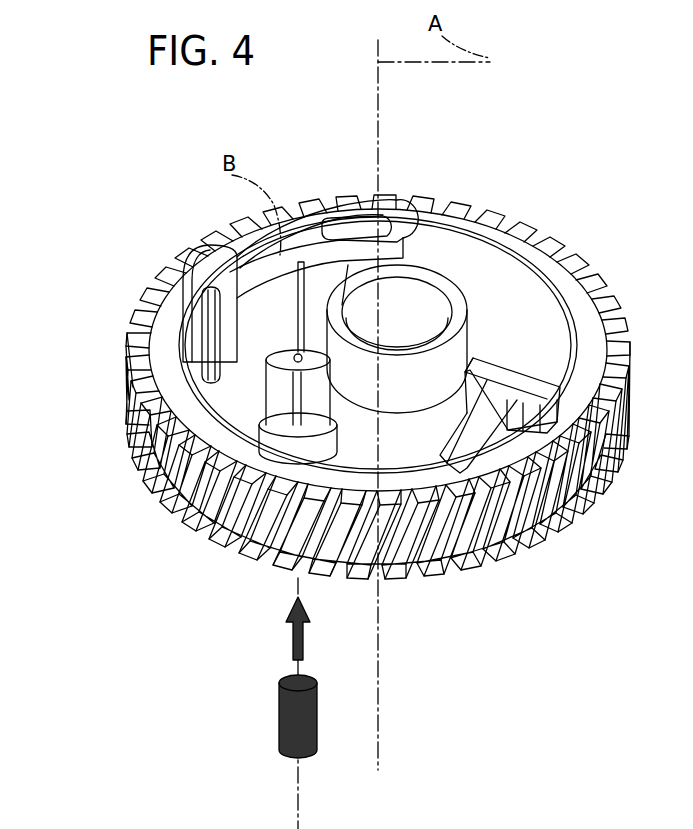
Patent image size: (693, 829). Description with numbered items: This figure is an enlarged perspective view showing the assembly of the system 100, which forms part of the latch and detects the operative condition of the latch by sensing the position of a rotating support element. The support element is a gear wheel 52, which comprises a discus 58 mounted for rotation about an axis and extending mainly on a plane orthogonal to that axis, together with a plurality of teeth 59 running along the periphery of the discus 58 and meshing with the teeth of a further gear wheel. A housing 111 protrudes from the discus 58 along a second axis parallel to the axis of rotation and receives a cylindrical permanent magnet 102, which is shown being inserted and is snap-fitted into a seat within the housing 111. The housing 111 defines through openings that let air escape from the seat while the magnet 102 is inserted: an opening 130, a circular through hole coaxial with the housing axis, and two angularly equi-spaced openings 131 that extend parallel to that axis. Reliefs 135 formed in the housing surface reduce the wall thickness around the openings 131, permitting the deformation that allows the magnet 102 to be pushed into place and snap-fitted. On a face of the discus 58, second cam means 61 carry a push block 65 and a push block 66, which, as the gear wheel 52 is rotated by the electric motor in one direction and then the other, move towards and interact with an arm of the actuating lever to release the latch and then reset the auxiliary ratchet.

The system 100 is at (567, 214).
The gear wheel 52 is at (463, 604).
The teeth 59 is at (580, 526).
The discus 58 is at (470, 262).
The reliefs 135 is at (290, 473).
The second cam means 61 is at (234, 223).
The push block 66 is at (222, 241).
The opening 130 is at (296, 308).
The openings 131 is at (300, 426).
The housing 111 is at (278, 441).
The push block 65 is at (562, 388).
The permanent magnet 102 is at (290, 713).